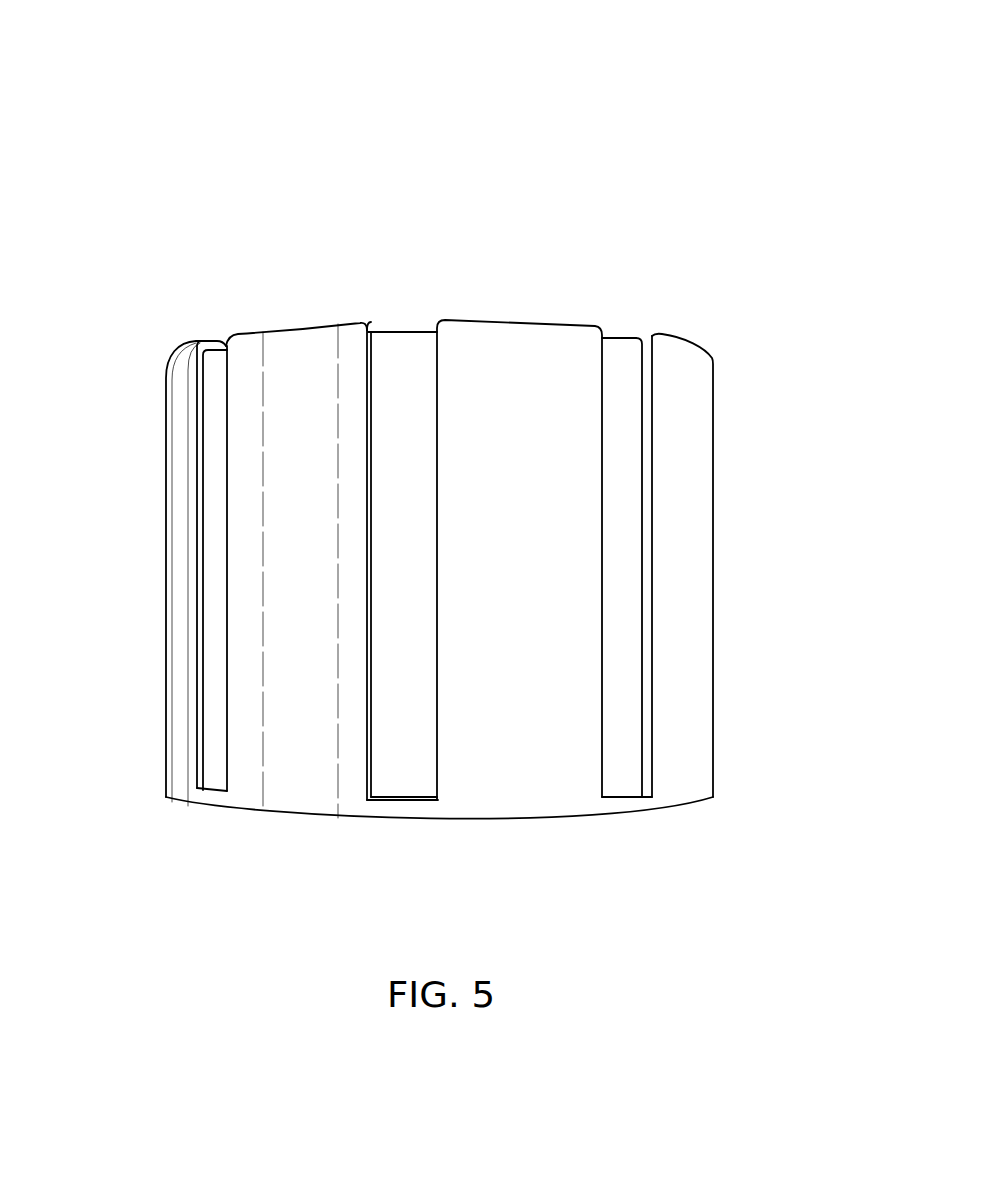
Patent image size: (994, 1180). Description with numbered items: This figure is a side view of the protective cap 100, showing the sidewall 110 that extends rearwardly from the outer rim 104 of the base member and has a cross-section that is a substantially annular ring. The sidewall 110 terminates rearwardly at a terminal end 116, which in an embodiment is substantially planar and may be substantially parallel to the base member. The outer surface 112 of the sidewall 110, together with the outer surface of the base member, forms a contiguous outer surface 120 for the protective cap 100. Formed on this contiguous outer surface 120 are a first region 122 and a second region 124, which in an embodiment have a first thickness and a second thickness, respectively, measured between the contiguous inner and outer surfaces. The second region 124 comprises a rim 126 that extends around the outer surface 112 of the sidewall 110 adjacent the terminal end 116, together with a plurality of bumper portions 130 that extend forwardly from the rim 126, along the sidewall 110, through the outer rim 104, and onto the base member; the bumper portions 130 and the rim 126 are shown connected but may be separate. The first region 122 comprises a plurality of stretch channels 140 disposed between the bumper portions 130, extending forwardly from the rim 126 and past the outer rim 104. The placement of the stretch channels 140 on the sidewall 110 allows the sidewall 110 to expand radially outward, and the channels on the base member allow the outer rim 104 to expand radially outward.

The protective cap 100 is at (156, 73).
The outer rim 104 is at (402, 332).
The sidewall 110 is at (672, 577).
The outer surface 112 is at (623, 740).
The terminal end 116 is at (578, 821).
The contiguous outer surface 120 is at (563, 365).
The first region 122 is at (383, 360).
The second region 124 is at (293, 362).
The rim 126 is at (228, 803).
The bumper portions 130 is at (180, 541).
The stretch channels 140 is at (215, 422).